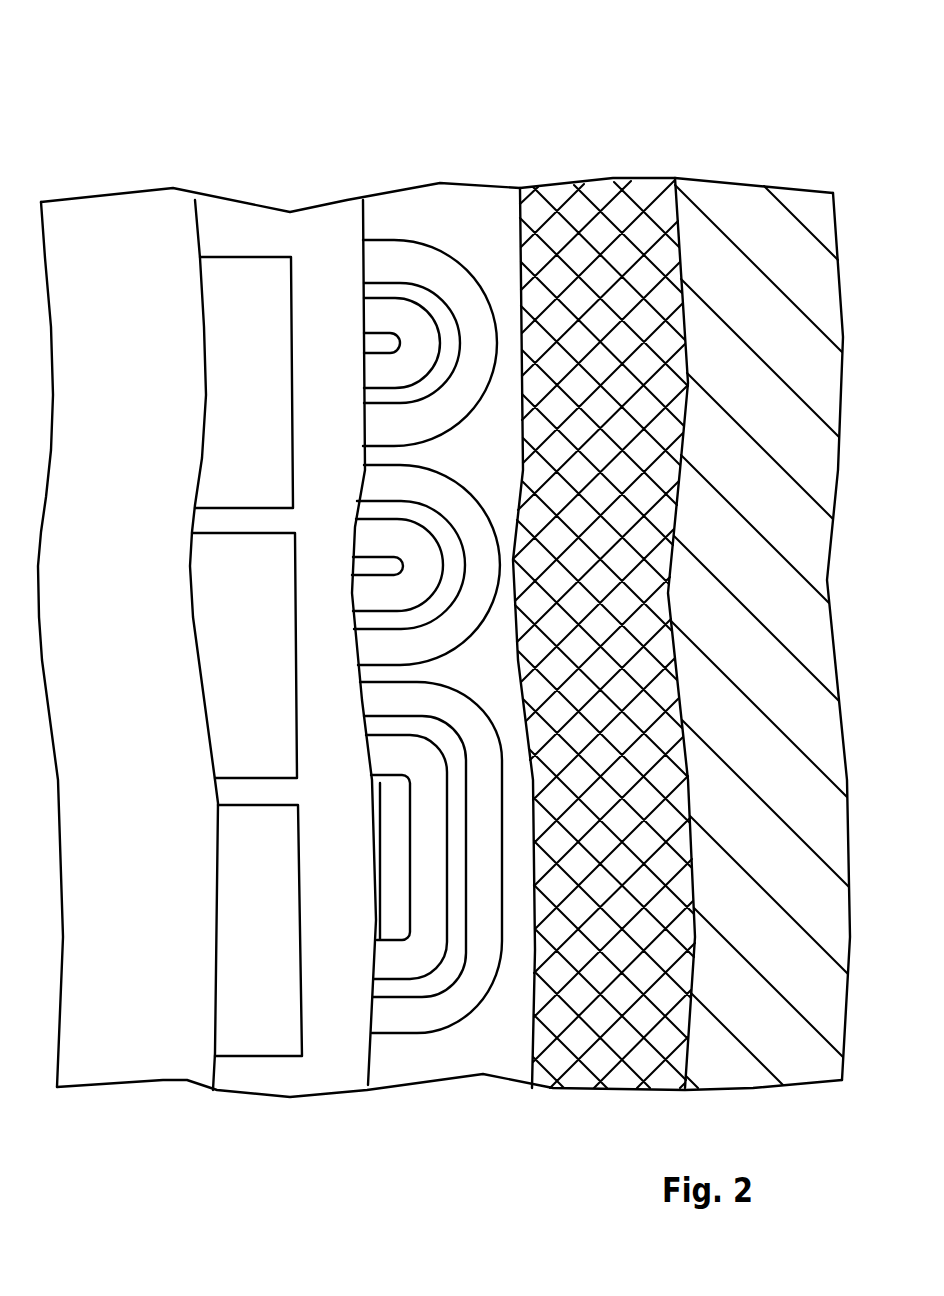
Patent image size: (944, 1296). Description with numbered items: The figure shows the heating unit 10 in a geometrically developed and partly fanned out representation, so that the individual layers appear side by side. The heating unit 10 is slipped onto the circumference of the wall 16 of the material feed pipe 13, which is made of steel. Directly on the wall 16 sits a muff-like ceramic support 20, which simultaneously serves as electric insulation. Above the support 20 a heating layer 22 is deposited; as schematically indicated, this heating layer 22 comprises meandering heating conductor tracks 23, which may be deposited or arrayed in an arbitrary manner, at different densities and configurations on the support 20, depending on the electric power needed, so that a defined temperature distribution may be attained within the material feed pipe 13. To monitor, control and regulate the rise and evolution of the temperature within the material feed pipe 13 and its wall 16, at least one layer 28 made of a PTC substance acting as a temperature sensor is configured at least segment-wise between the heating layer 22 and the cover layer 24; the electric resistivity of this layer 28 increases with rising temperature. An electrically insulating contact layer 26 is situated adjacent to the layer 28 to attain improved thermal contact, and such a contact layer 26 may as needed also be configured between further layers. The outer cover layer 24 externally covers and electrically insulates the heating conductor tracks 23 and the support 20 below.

The heating unit 10 is at (434, 68).
The material feed pipe 13 is at (810, 564).
The wall 16 is at (763, 218).
The ceramic support 20 is at (615, 210).
The heating layer 22 is at (462, 249).
The heating conductor tracks 23 is at (385, 320).
The outer cover layer 24 is at (123, 212).
The electrically insulating contact layer 26 is at (292, 233).
The layer made of a PTC substance 28 is at (230, 288).